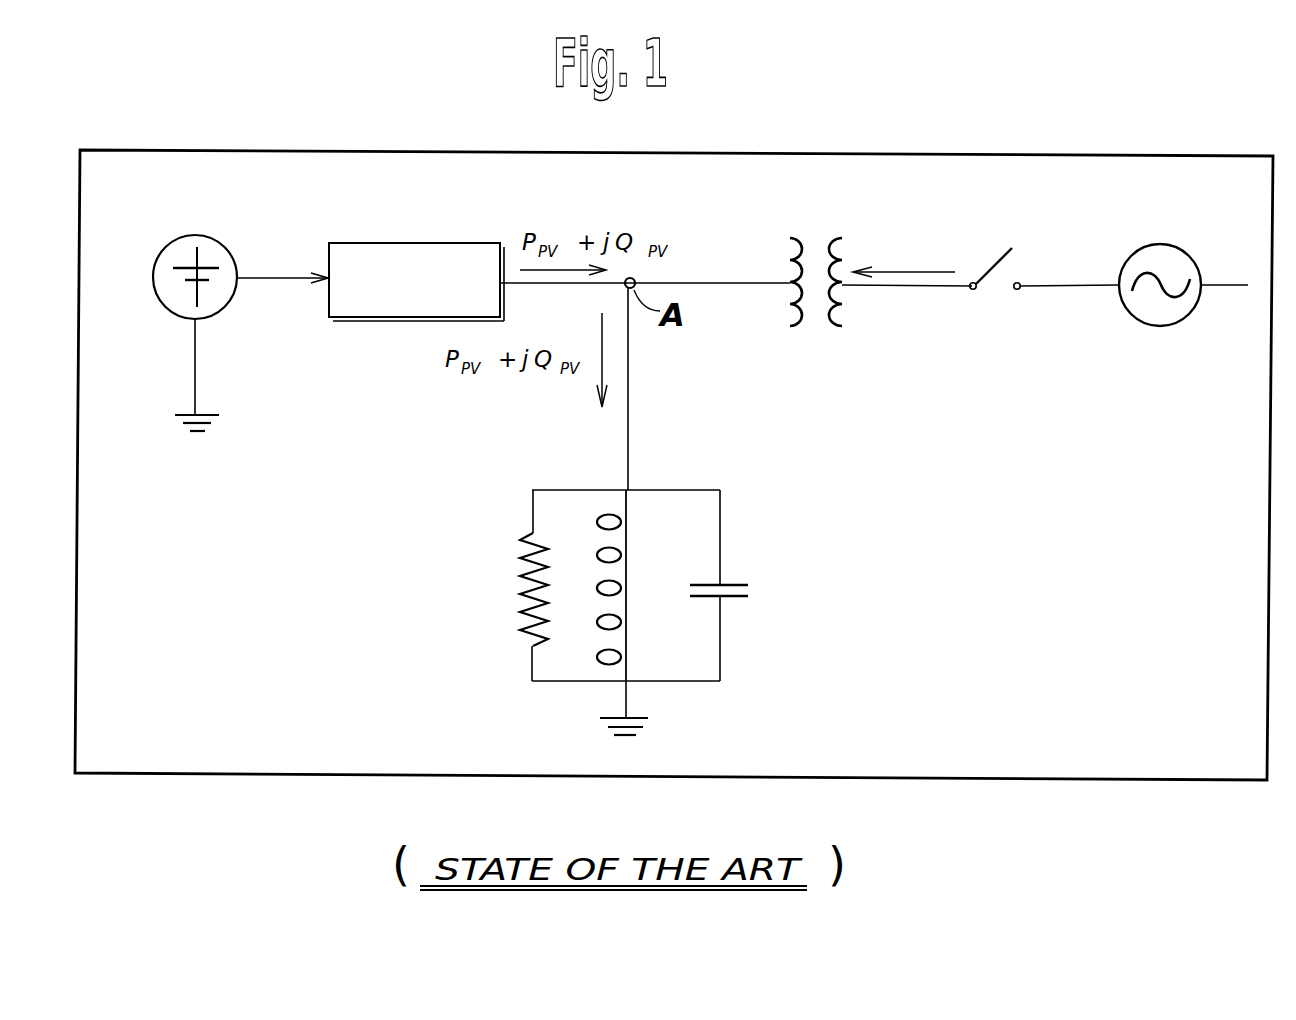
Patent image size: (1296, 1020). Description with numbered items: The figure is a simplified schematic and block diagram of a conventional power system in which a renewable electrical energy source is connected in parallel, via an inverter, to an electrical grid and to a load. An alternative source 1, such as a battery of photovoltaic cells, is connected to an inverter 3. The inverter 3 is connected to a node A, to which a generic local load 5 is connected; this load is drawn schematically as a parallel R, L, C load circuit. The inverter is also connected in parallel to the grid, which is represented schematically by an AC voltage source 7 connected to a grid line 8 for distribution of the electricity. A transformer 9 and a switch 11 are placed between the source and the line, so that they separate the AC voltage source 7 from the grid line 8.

The alternative source 1 is at (207, 298).
The inverter 3 is at (372, 305).
The local load 5 is at (742, 573).
The AC voltage source 7 is at (1134, 325).
The grid line 8 is at (911, 290).
The transformer 9 is at (815, 327).
The switch 11 is at (1020, 262).